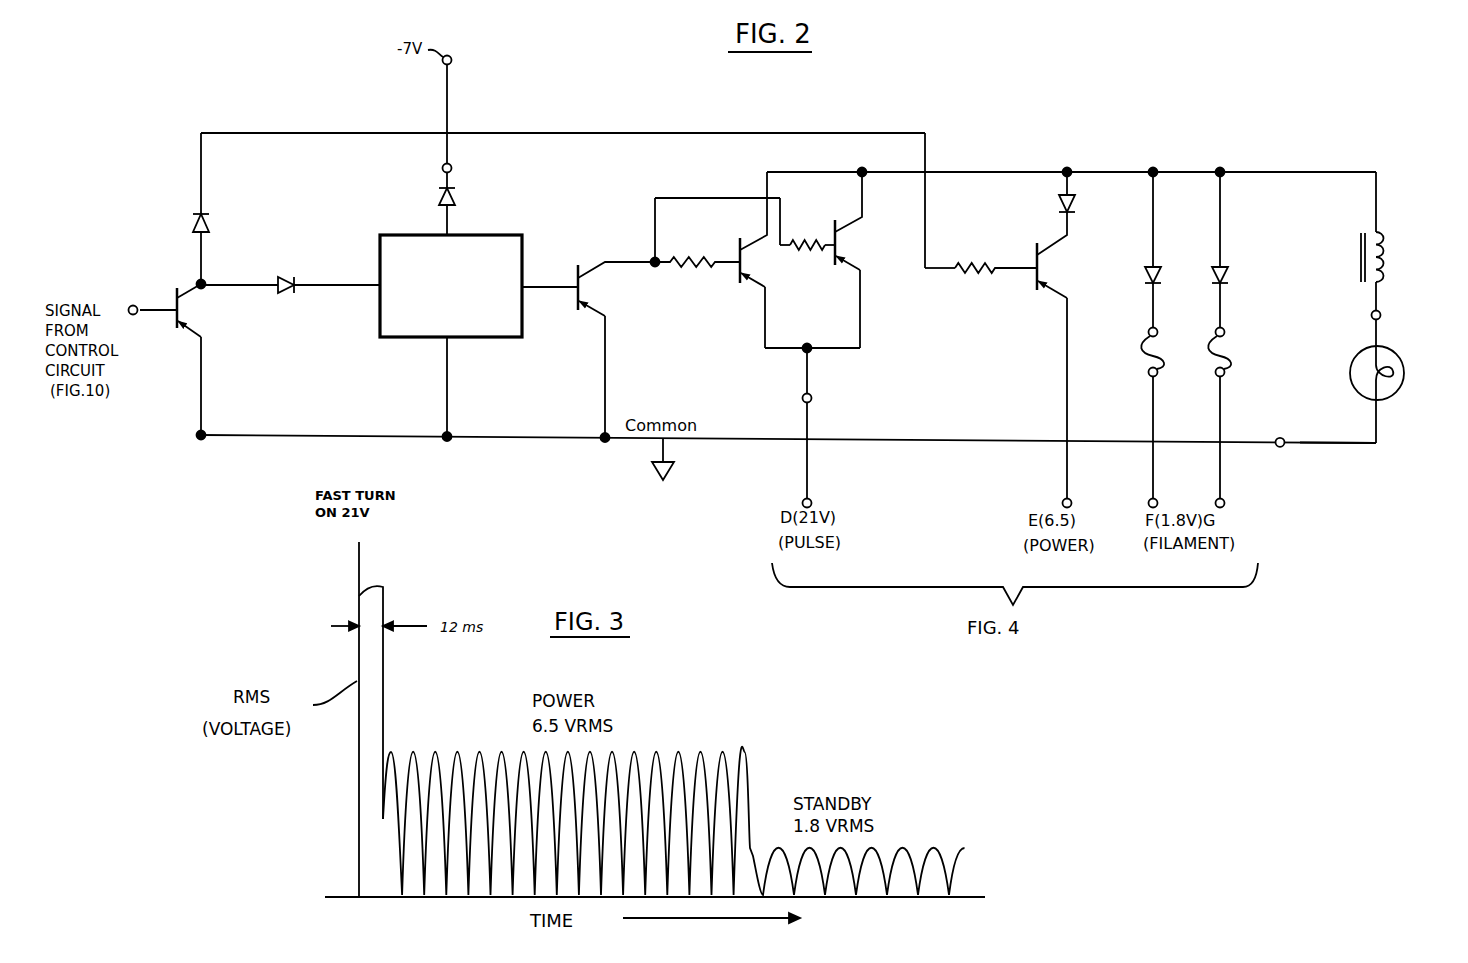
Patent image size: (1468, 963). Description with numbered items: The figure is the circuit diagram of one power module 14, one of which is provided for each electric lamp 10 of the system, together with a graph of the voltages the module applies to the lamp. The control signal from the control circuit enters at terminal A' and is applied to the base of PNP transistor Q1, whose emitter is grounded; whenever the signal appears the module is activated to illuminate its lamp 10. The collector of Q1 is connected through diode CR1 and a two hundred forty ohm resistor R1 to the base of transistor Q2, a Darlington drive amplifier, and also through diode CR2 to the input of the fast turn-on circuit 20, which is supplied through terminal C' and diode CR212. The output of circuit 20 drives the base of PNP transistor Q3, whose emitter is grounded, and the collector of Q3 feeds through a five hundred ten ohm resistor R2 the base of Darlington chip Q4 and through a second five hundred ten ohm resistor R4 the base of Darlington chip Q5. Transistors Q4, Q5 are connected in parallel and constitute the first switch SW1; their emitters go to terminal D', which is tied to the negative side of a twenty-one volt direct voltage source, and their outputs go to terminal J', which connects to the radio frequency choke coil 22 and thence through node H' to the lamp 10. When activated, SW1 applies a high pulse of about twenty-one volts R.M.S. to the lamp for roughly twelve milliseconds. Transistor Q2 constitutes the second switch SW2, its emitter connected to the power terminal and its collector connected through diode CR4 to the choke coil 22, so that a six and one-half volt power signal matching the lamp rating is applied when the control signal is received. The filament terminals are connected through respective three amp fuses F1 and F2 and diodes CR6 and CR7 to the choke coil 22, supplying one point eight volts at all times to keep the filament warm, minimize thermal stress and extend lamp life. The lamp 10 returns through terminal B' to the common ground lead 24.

The power module 14 is at (1316, 750).
The fast turn-on circuit 20 is at (516, 243).
The radio frequency choke coil 22 is at (1388, 232).
The lamp 10 is at (1392, 388).
The common ground lead 24 is at (1337, 443).
The PNP transistor Q1 is at (177, 330).
The NPN transistor Q2 is at (1036, 283).
The PNP transistor Q3 is at (578, 270).
The NPN transistor Q4 is at (735, 247).
The NPN transistor Q5 is at (832, 262).
The resistor R1 is at (985, 263).
The resistor R2 is at (707, 266).
The resistor R4 is at (806, 240).
The diode CR1 is at (199, 205).
The diode CR2 is at (280, 291).
The diode CR212 is at (440, 192).
The diode CR4 is at (1100, 205).
The diode CR6 is at (1150, 267).
The diode CR7 is at (1229, 272).
The fuse F1 is at (1145, 341).
The fuse F2 is at (1228, 355).
The switch SW1 is at (822, 127).
The switch SW2 is at (1067, 141).
The terminal A' is at (126, 295).
The terminal B' is at (1293, 430).
The terminal C' is at (458, 158).
The terminal D' is at (821, 393).
The terminal H' is at (1392, 312).
The terminal J' is at (1300, 152).